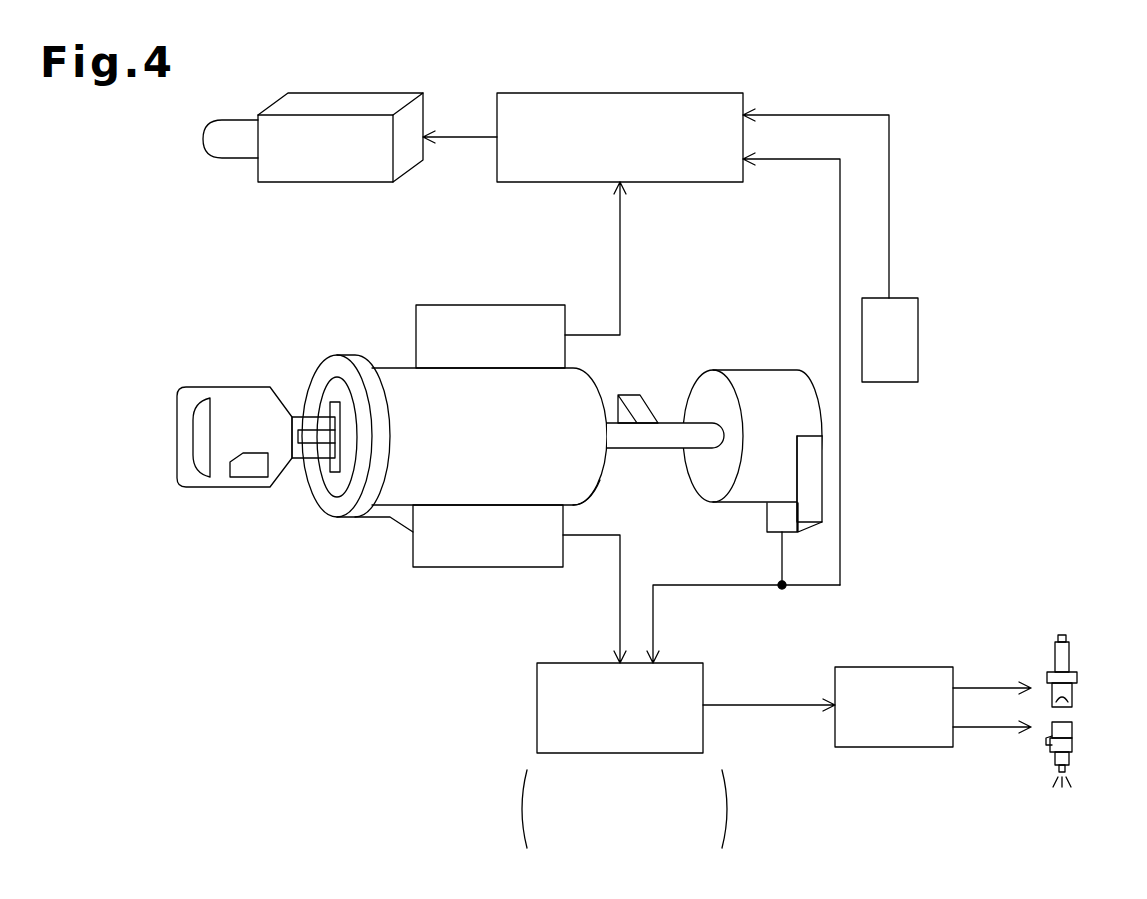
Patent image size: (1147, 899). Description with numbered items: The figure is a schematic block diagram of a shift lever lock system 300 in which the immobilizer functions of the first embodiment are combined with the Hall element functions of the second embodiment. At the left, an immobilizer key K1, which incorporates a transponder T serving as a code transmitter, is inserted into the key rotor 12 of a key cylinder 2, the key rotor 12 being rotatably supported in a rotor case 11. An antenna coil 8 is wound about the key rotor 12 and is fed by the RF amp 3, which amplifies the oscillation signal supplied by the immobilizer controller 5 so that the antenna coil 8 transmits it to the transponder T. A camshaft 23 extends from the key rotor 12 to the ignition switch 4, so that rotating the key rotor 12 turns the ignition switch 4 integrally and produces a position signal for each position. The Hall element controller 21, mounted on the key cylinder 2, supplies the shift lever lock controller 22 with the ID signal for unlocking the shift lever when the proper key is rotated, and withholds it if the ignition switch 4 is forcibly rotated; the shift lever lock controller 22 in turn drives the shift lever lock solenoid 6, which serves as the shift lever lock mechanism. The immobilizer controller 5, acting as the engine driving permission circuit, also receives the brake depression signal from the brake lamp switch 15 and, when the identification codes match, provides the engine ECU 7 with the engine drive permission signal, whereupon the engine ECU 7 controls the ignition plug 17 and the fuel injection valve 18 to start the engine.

The shift lever lock system 300 is at (257, 315).
The immobilizer key K1 is at (238, 394).
The transponder T is at (247, 476).
The antenna coil 8 is at (333, 353).
The key rotor 12 is at (333, 478).
The key cylinder 2 is at (586, 473).
The rotor case 11 is at (574, 500).
The camshaft 23 is at (663, 438).
The ignition switch 4 is at (705, 490).
The RF amp 3 is at (461, 567).
The Hall element controller 21 is at (487, 304).
The shift lever lock controller 22 is at (495, 158).
The shift lever lock solenoid 6 is at (324, 183).
The brake lamp switch 15 is at (918, 336).
The immobilizer controller 5 is at (680, 663).
The engine ECU 7 is at (933, 667).
The ignition plug 17 is at (1064, 651).
The fuel injection valve 18 is at (1066, 727).